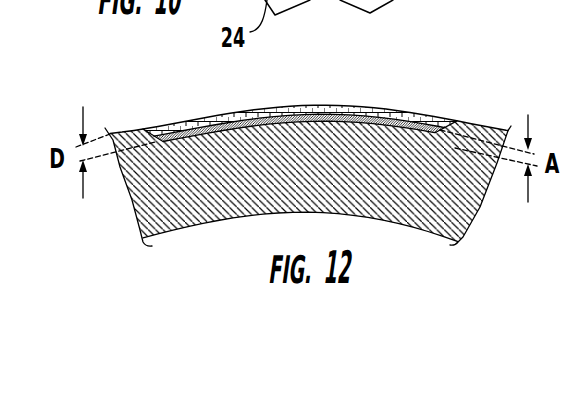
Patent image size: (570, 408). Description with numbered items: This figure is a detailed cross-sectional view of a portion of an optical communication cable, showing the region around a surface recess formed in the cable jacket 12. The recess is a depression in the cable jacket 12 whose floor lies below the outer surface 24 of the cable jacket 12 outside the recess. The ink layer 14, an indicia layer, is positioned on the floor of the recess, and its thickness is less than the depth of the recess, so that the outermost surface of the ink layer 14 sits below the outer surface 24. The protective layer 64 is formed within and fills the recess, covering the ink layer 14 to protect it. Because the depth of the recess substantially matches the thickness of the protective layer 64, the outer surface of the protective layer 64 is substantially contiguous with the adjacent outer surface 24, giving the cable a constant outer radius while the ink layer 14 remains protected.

The cable jacket 12 is at (462, 207).
The ink layer 14 is at (343, 107).
The outer surface 24 is at (490, 126).
The protective layer 64 is at (436, 125).